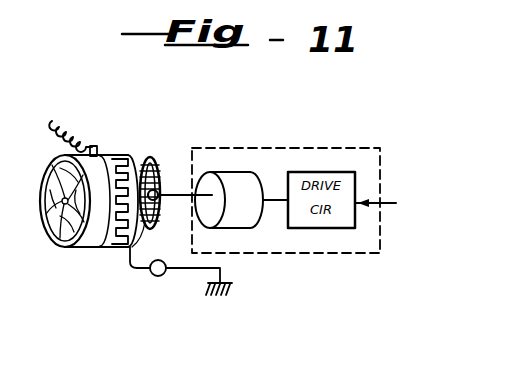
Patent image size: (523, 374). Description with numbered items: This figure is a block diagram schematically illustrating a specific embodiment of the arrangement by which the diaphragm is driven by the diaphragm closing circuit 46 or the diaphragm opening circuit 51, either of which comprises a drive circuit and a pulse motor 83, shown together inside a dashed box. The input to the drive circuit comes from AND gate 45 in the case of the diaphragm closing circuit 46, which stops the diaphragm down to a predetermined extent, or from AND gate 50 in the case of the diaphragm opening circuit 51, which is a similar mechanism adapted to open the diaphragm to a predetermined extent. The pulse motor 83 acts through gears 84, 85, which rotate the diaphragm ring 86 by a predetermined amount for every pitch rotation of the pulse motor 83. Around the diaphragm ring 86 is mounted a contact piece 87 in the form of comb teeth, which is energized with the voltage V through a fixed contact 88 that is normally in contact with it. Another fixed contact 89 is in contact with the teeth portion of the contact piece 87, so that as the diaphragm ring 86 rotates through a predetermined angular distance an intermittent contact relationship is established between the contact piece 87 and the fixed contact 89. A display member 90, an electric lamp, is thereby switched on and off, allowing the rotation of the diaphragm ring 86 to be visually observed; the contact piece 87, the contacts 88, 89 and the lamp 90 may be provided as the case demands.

The pulse motor 83 is at (246, 220).
The gear 84 is at (164, 190).
The gear 85 is at (148, 158).
The diaphragm ring 86 is at (80, 248).
The contact piece 87 is at (109, 248).
The fixed contact 88 is at (98, 148).
The fixed contact 89 is at (150, 228).
The display member 90 is at (163, 280).
The diaphragm closing circuit 46 is at (286, 182).
The diaphragm opening circuit 51 is at (253, 148).
The AND gate 45 is at (411, 208).
The AND gate 50 is at (411, 208).